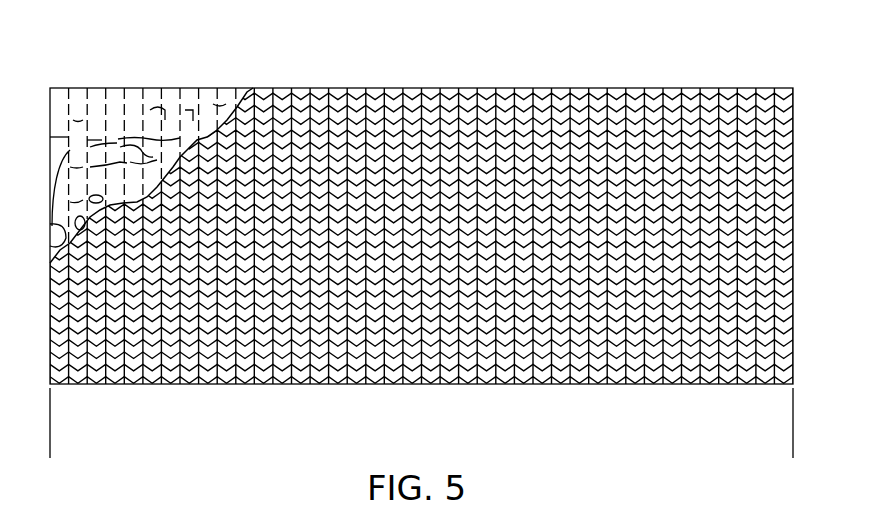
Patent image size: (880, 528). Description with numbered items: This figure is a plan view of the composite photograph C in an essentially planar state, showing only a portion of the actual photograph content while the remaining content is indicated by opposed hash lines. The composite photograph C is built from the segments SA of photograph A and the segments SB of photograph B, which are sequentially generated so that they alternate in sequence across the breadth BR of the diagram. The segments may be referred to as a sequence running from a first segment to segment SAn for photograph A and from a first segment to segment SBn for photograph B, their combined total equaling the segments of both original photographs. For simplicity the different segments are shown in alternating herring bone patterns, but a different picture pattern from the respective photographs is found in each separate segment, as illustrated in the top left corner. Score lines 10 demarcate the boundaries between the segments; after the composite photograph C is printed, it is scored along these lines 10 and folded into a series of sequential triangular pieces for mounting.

The score lines 10 is at (719, 100).
The composite photograph C is at (427, 78).
The segments of photograph A SA is at (58, 97).
The segments of photograph B SB is at (80, 92).
The nth segment of photograph A SAn is at (732, 378).
The nth segment of photograph B SBn is at (747, 360).
The breadth BR is at (793, 447).